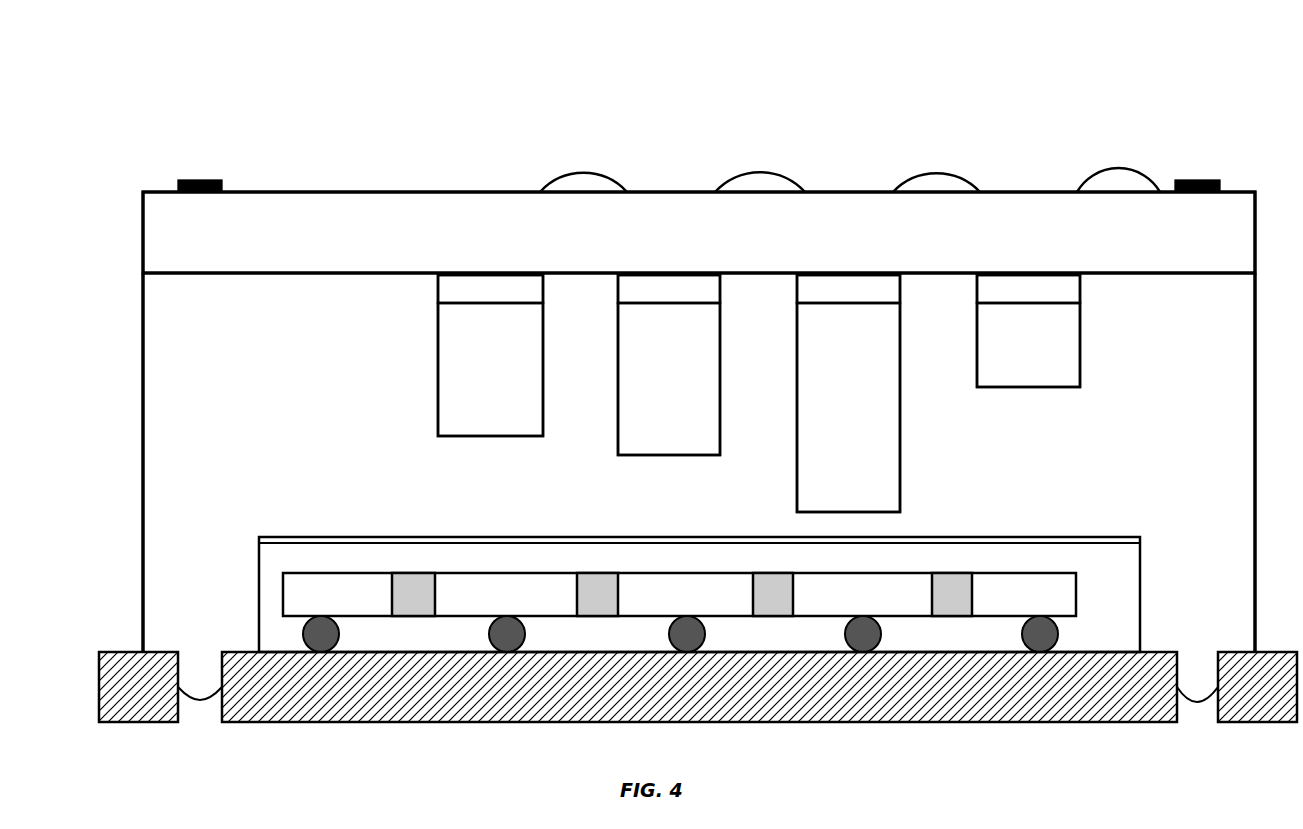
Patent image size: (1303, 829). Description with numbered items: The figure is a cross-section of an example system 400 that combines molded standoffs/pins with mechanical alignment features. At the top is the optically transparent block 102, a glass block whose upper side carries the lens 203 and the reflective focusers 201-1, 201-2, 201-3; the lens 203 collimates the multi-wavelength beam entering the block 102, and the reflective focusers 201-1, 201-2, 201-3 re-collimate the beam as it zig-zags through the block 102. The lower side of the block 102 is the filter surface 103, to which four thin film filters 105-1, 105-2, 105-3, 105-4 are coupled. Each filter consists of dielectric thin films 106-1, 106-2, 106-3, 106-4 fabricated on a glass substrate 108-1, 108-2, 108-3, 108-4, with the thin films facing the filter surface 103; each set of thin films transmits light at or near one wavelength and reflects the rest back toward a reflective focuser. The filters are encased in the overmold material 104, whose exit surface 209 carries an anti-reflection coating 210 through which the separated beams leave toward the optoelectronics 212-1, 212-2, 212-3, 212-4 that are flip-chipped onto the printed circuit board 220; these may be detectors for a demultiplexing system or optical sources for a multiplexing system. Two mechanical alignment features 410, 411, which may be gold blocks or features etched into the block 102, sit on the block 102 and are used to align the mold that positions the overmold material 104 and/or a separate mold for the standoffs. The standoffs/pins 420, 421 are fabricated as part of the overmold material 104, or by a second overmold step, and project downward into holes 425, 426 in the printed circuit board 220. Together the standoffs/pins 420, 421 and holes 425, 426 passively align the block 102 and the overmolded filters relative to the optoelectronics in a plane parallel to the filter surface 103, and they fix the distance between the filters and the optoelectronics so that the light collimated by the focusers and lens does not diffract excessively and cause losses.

The system 400 is at (278, 56).
The optically transparent block 102 is at (150, 255).
The filter surface 103 is at (220, 273).
The overmold material 104 is at (142, 480).
The mechanical alignment feature 410 is at (178, 182).
The mechanical alignment feature 411 is at (1175, 180).
The reflective focuser 201-1 is at (548, 178).
The reflective focuser 201-2 is at (723, 178).
The reflective focuser 201-3 is at (905, 178).
The lens 203 is at (1082, 180).
The thin film filter 105-1 is at (450, 355).
The thin film filter 105-2 is at (632, 365).
The thin film filter 105-3 is at (811, 393).
The thin film filter 105-4 is at (991, 331).
The dielectric thin films 106-1 is at (519, 300).
The dielectric thin films 106-2 is at (698, 300).
The dielectric thin films 106-3 is at (877, 298).
The dielectric thin films 106-4 is at (1057, 300).
The substrate 108-1 is at (490, 369).
The substrate 108-2 is at (669, 379).
The substrate 108-3 is at (795, 512).
The substrate 108-4 is at (1028, 345).
The anti-reflection coating 210 is at (259, 540).
The exit surface 209 is at (380, 537).
The optoelectronic device 212-1 is at (412, 590).
The optoelectronic device 212-2 is at (600, 590).
The optoelectronic device 212-3 is at (773, 588).
The detector 212-4 is at (953, 590).
The printed circuit board 220 is at (440, 722).
The standoff/pin 420 is at (199, 700).
The standoff/pin 421 is at (1197, 702).
The hole 425 is at (225, 738).
The hole 426 is at (1225, 747).